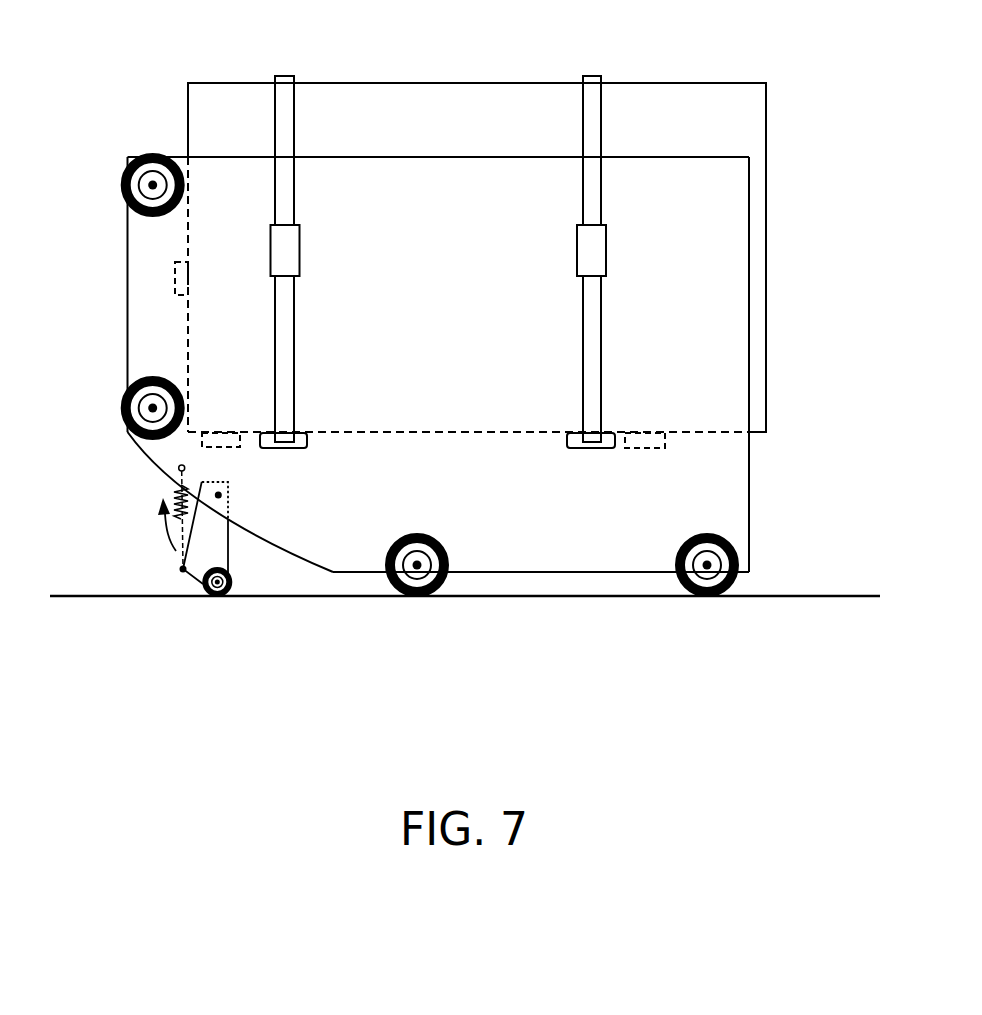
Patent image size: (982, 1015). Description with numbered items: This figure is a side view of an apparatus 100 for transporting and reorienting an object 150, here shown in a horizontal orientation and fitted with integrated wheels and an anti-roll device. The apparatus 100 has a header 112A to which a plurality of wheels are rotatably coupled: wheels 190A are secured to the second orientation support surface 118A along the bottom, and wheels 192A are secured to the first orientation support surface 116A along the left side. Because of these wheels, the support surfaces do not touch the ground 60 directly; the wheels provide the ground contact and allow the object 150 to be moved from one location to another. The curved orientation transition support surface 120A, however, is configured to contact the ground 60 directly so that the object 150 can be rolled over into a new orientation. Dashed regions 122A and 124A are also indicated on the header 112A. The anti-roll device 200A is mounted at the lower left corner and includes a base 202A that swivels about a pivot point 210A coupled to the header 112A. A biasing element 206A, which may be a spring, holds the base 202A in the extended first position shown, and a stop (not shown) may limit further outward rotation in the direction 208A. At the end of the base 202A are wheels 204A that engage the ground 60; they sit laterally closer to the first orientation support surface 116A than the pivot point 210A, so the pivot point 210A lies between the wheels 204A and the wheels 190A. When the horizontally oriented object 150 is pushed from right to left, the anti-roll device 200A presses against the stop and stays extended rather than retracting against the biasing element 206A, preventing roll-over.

The ground 60 is at (67, 596).
The apparatus 100 is at (755, 505).
The header 112A is at (749, 544).
The first orientation support surface 116A is at (127, 250).
The second orientation support surface 118A is at (622, 573).
The orientation transition support surface 120A is at (167, 476).
The latch recess 122A is at (175, 288).
The guide slot 124A is at (202, 444).
The object 150 is at (746, 83).
The wheels 190A is at (433, 593).
The wheels 192A is at (123, 177).
The anti-roll device 200A is at (242, 563).
The base 202A is at (230, 520).
The wheels 204A is at (201, 593).
The biasing element 206A is at (186, 470).
The direction 208A is at (177, 552).
The pivot point 210A is at (222, 494).